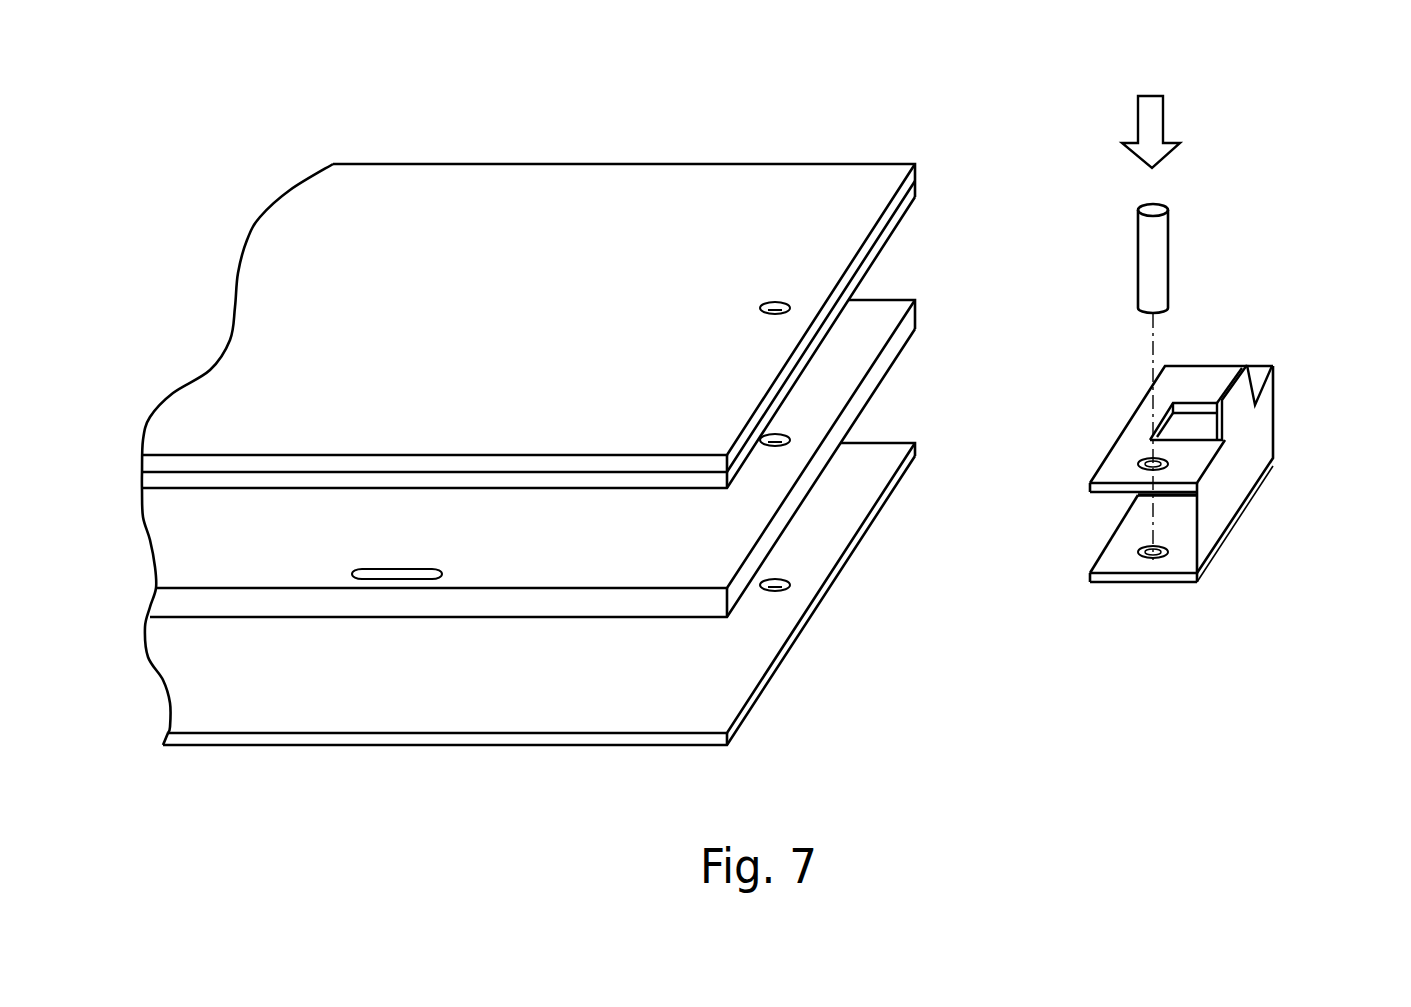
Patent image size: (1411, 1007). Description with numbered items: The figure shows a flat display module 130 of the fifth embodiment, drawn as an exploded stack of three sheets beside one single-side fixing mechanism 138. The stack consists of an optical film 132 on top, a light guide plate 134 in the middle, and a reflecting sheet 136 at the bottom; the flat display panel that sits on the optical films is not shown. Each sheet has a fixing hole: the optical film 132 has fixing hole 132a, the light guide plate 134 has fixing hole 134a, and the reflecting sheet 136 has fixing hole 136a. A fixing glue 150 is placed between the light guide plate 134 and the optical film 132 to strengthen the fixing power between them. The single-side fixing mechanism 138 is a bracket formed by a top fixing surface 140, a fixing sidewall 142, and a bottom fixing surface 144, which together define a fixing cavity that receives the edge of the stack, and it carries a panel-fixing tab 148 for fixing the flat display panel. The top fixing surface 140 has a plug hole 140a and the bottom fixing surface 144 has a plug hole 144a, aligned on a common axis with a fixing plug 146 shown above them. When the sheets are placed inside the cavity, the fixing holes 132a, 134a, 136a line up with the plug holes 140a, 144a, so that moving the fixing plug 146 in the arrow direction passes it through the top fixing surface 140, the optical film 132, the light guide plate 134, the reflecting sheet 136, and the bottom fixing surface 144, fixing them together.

The flat display module 130 is at (402, 105).
The optical film 132 is at (277, 250).
The fixing hole 132a is at (778, 305).
The light guide plate 134 is at (177, 542).
The fixing hole 134a is at (778, 440).
The reflecting sheet 136 is at (177, 678).
The fixing hole 136a is at (778, 585).
The fixing glue 150 is at (400, 573).
The single-side fixing mechanism 138 is at (1283, 518).
The top fixing surface 140 is at (1143, 413).
The plug hole 140a is at (1140, 460).
The fixing sidewall 142 is at (1246, 470).
The bottom fixing surface 144 is at (1108, 582).
The plug hole 144a is at (1158, 557).
The fixing plug 146 is at (1155, 208).
The panel-fixing tab 148 is at (1237, 370).